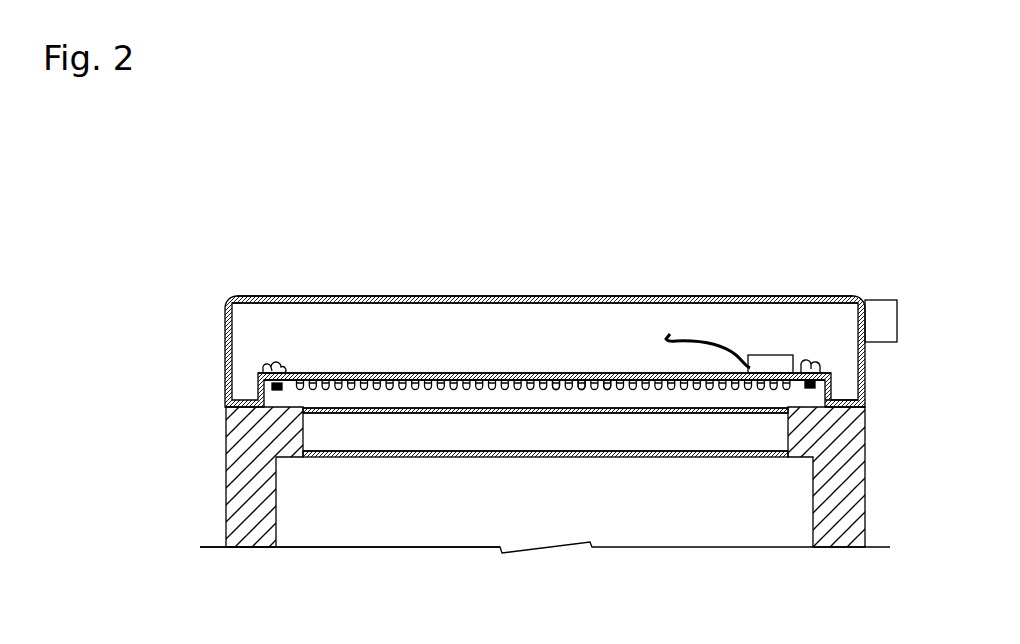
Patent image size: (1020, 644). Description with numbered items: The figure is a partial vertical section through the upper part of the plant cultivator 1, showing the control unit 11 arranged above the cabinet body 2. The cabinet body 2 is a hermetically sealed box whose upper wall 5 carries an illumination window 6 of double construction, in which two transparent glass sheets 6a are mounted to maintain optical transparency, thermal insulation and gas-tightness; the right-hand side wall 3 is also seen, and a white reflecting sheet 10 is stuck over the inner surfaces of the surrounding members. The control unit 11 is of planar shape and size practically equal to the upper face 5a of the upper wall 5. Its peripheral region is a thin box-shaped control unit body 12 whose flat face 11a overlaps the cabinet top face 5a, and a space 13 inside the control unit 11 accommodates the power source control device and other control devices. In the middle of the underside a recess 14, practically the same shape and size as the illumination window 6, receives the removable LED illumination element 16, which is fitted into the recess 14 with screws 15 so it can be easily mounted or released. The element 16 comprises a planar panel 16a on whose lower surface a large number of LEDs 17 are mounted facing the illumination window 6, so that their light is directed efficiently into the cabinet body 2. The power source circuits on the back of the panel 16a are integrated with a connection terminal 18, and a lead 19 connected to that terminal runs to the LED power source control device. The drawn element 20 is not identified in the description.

The plant cultivator 1 is at (752, 189).
The cabinet body 2 is at (889, 514).
The right-hand side wall 3 is at (226, 529).
The upper wall 5 is at (303, 437).
The upper face 5a is at (850, 398).
The illumination window 6 is at (445, 440).
The transparent glass sheets 6a is at (680, 413).
The white reflecting sheet 10 is at (813, 500).
The control unit 11 is at (274, 280).
The flat face 11a is at (840, 407).
The control unit body 12 is at (412, 296).
The space 13 is at (334, 328).
The recess 14 is at (388, 396).
The screws 15 is at (270, 370).
The LED illumination element 16 is at (500, 357).
The panel 16a is at (582, 368).
The LEDs 17 is at (607, 390).
The connection terminal 18 is at (776, 354).
The lead 19 is at (687, 336).
The external connector 20 is at (882, 300).